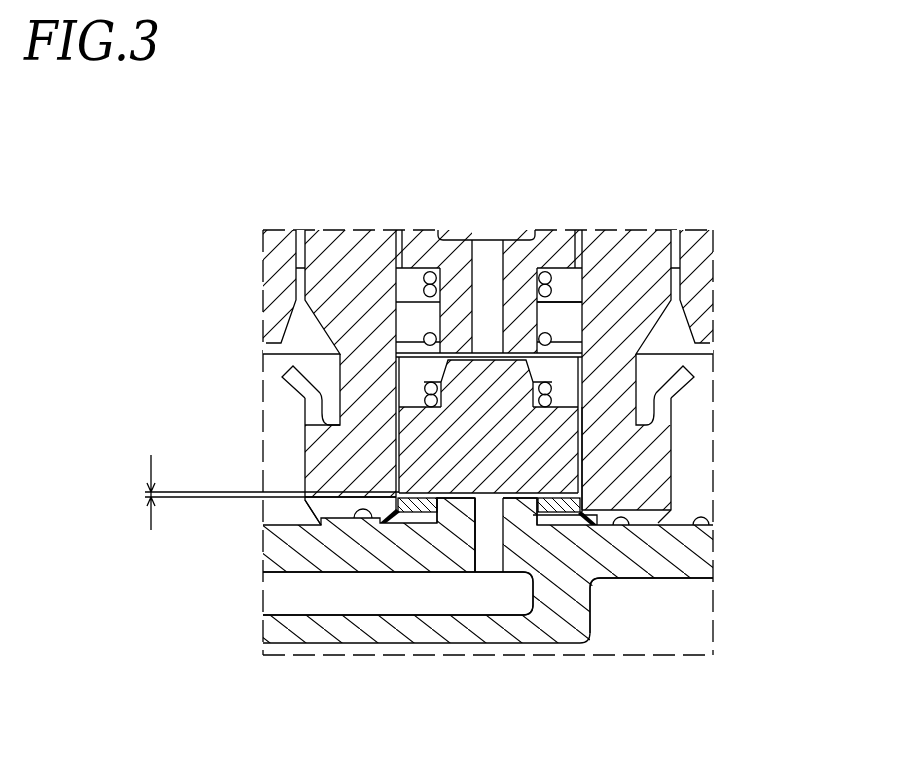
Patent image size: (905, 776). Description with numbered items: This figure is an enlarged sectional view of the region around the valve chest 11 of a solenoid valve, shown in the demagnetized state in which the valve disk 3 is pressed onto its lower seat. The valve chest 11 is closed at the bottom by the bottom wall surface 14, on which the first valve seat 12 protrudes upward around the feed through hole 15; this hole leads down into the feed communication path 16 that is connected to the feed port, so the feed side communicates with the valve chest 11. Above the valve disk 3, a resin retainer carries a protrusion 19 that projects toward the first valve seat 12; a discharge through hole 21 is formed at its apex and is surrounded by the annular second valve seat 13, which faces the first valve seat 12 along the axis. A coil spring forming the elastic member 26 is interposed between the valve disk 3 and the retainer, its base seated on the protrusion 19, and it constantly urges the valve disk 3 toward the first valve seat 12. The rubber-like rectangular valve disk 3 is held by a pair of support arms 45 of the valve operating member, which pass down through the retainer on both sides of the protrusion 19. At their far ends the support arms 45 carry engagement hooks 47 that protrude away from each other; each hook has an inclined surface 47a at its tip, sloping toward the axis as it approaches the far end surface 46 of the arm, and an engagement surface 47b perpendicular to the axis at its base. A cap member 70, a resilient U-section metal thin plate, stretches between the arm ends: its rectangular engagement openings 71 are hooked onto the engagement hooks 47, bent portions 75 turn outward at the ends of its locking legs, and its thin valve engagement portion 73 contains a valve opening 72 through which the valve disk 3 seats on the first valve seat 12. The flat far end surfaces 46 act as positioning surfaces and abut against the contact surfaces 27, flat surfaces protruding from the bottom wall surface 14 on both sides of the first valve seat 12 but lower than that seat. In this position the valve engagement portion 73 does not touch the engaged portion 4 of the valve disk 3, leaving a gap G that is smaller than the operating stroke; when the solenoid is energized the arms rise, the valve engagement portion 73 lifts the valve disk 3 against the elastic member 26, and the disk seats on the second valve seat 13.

The valve disk 3 is at (455, 453).
The engaged portion 4 is at (512, 505).
The valve chest 11 is at (696, 482).
The first valve seat 12 is at (445, 497).
The second valve seat 13 is at (468, 353).
The bottom wall surface 14 is at (680, 525).
The feed through hole 15 is at (478, 555).
The feed communication path 16 is at (338, 597).
The protrusion 19 is at (554, 324).
The discharge through hole 21 is at (488, 278).
The elastic member 26 is at (512, 353).
The contact surfaces 27 is at (340, 560).
The support arms 45 is at (295, 324).
The far end surface 46 is at (352, 512).
The engagement hooks 47 is at (290, 449).
The inclined surface 47a is at (325, 520).
The engagement surface 47b is at (313, 418).
The cap member 70 is at (690, 396).
The engagement openings 71 is at (598, 520).
The valve opening 72 is at (527, 512).
The valve engagement portion 73 is at (415, 528).
The bent portions 75 is at (300, 382).
The gap G is at (261, 496).